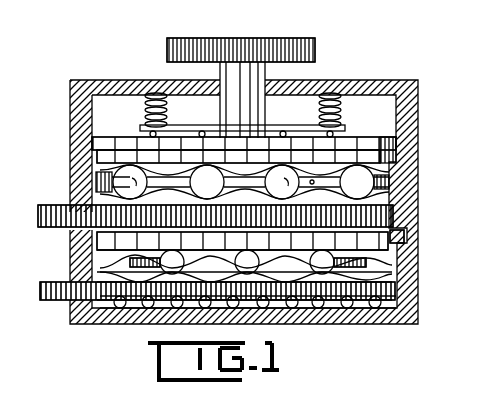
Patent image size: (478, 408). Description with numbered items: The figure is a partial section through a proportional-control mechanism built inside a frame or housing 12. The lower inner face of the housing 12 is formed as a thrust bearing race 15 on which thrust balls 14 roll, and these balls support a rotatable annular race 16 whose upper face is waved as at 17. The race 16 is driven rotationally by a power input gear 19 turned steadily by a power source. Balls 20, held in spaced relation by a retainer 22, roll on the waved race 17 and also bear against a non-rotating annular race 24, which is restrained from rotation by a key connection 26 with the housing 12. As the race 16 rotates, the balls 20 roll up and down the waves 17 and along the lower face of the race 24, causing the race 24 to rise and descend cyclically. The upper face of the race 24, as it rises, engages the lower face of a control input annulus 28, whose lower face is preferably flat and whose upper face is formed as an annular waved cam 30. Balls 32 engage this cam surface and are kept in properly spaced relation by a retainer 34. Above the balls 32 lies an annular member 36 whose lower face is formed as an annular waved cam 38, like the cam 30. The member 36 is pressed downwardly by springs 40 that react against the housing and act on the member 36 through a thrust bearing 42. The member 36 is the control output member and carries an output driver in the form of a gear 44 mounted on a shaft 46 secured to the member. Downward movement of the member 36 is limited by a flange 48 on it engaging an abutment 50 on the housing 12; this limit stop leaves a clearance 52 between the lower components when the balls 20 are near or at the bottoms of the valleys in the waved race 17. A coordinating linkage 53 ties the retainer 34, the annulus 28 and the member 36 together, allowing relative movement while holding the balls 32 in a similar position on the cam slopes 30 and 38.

The housing 12 is at (418, 102).
The thrust balls 14 is at (355, 306).
The thrust bearing race 15 is at (305, 306).
The rotatable annular race 16 is at (395, 286).
The waved upper face 17 is at (372, 268).
The power input gear 19 is at (62, 300).
The balls 20 is at (247, 262).
The retainer 22 is at (132, 263).
The non-rotating annular race 24 is at (194, 250).
The key connection 26 is at (404, 240).
The control input annulus 28 is at (393, 216).
The annular waved cam 30 is at (385, 190).
The balls 32 is at (243, 182).
The retainer 34 is at (176, 170).
The annular member 36 is at (255, 170).
The annular waved cam 38 is at (312, 181).
The springs 40 is at (342, 110).
The thrust bearing 42 is at (342, 130).
The gear 44 is at (315, 50).
The shaft 46 is at (265, 73).
The flange 48 is at (92, 143).
The abutment 50 is at (97, 157).
The clearance 52 is at (100, 248).
The coordinating linkage 53 is at (96, 184).